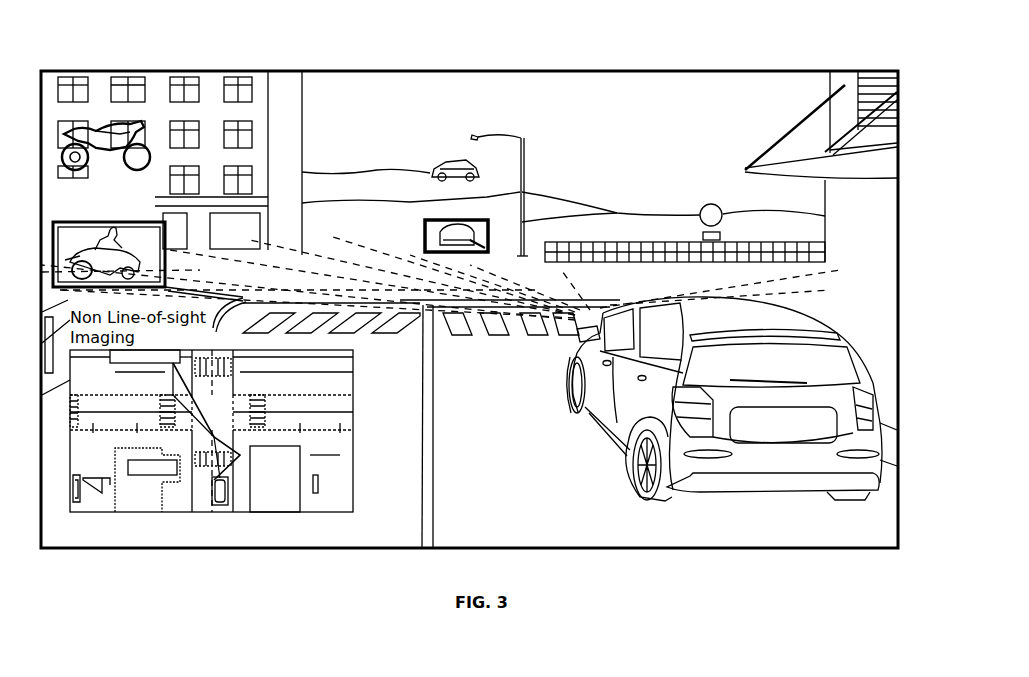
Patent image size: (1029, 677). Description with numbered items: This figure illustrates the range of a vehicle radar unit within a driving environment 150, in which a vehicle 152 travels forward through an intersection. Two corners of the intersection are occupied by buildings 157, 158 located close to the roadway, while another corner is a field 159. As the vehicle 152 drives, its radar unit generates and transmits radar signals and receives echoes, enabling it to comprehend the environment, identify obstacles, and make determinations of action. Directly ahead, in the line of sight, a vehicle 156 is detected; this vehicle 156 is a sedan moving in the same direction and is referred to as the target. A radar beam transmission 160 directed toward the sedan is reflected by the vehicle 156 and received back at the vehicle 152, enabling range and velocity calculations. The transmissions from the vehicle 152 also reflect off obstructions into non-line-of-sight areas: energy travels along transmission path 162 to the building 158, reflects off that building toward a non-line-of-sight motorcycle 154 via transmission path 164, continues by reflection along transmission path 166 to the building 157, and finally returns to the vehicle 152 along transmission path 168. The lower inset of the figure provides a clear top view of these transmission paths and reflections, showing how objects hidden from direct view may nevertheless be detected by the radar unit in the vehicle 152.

The driving environment 150 is at (64, 36).
The vehicle 152 is at (836, 332).
The motorcycle 154 is at (41, 271).
The vehicle 156 is at (420, 238).
The building 157 is at (175, 62).
The building 158 is at (873, 64).
The field 159 is at (652, 228).
The radar beam transmission 160 is at (497, 258).
The transmission path 162 is at (787, 283).
The transmission path 164 is at (592, 278).
The transmission path 166 is at (197, 246).
The transmission path 168 is at (280, 250).